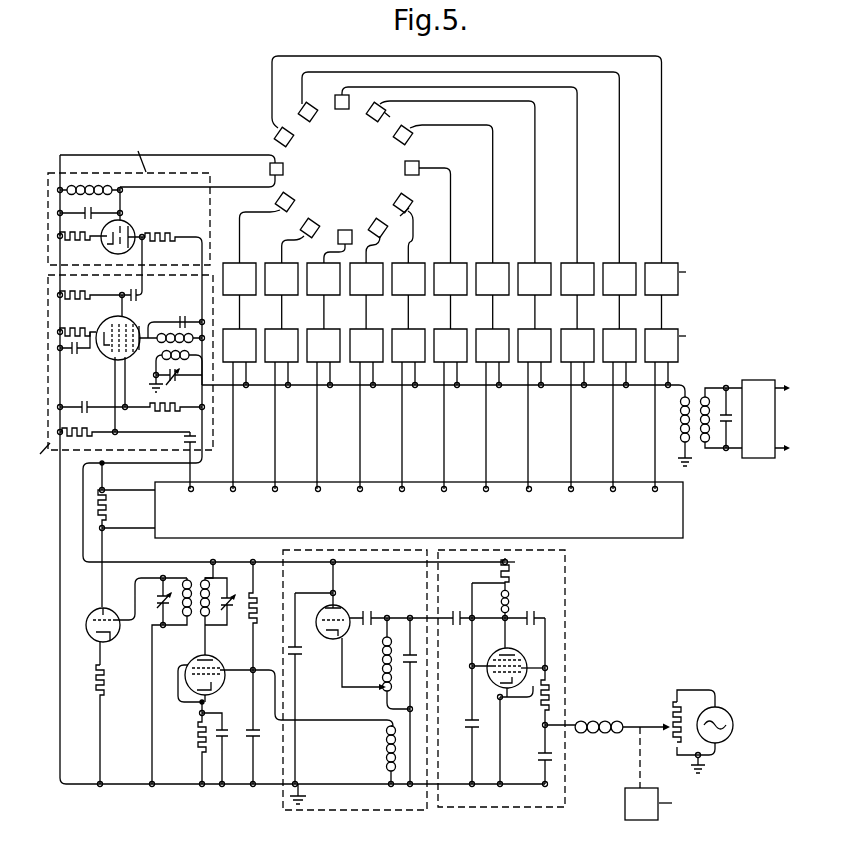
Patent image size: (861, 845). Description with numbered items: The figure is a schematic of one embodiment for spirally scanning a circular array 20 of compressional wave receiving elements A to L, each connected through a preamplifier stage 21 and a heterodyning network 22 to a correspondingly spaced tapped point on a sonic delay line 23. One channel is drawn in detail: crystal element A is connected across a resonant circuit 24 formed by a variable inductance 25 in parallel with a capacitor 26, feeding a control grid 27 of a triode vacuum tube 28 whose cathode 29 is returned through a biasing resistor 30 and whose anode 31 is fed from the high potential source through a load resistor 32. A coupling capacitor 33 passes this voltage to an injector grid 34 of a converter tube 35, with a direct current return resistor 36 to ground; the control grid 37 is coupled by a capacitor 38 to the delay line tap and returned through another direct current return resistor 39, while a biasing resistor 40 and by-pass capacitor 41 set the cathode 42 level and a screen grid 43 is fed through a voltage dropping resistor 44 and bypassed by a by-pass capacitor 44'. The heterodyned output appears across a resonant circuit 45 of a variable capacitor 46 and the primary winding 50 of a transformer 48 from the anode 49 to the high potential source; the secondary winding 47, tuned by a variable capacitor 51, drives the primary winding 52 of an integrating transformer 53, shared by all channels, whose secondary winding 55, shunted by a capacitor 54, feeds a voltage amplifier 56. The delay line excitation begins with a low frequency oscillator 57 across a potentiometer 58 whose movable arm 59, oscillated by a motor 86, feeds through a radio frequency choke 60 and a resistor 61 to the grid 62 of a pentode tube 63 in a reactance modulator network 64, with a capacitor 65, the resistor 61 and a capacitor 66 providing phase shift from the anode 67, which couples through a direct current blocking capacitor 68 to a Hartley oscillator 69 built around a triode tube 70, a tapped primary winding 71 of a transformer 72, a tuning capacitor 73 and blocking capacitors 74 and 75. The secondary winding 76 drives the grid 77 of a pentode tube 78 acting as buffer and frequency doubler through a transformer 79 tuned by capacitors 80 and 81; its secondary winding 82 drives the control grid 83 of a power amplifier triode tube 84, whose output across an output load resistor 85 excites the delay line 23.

The circular array 20 is at (353, 175).
The preamplifier stage 21 is at (266, 262).
The heterodyning network 22 is at (266, 328).
The sonic delay line 23 is at (419, 510).
The resonant circuit 24 is at (122, 200).
The variable inductance 25 is at (101, 203).
The capacitor 26 is at (85, 208).
The control grid 27 is at (125, 225).
The triode vacuum tube 28 is at (131, 233).
The cathode 29 is at (106, 247).
The biasing resistor 30 is at (72, 242).
The anode 31 is at (126, 249).
The load resistor 32 is at (172, 234).
The coupling capacitor 33 is at (131, 289).
The injector grid 34 is at (136, 322).
The converter tube 35 is at (138, 332).
The direct current return resistor 36 is at (57, 296).
The control grid 37 is at (102, 362).
The capacitor 38 is at (184, 441).
The direct current return resistor 39 is at (98, 436).
The biasing resistor 40 is at (77, 322).
The by-pass capacitor 41 is at (72, 355).
The cathode 42 is at (120, 298).
The screen grid 43 is at (113, 378).
The voltage dropping resistor 44 is at (165, 413).
The by-pass capacitor 44' is at (92, 398).
The resonant circuit 45 is at (188, 318).
The variable capacitor 46 is at (176, 318).
The secondary winding 47 is at (152, 375).
The transformer 48 is at (212, 340).
The anode 49 is at (158, 358).
The primary winding 50 is at (163, 318).
The variable capacitor 51 is at (174, 384).
The primary winding 52 is at (679, 405).
The integrating transformer 53 is at (703, 392).
The capacitor 54 is at (731, 418).
The secondary winding 55 is at (707, 450).
The voltage amplifier 56 is at (758, 458).
The low frequency oscillator 57 is at (734, 725).
The potentiometer 58 is at (673, 702).
The movable arm 59 is at (663, 725).
The radio frequency choke 60 is at (600, 714).
The resistor 61 is at (553, 702).
The grid 62 is at (498, 689).
The pentode tube 63 is at (523, 655).
The reactance modulator network 64 is at (561, 585).
The capacitor 65 is at (530, 611).
The capacitor 66 is at (536, 751).
The anode 67 is at (497, 655).
The direct current blocking capacitor 68 is at (453, 610).
The Hartley oscillator 69 is at (281, 557).
The triode tube 70 is at (342, 607).
The tapped primary winding 71 is at (381, 658).
The transformer 72 is at (385, 710).
The tuning capacitor 73 is at (404, 656).
The direct current blocking capacitor 74 is at (303, 650).
The direct current blocking capacitor 75 is at (372, 610).
The secondary winding 76 is at (386, 753).
The grid 77 is at (218, 683).
The pentode tube 78 is at (218, 661).
The transformer 79 is at (197, 583).
The capacitor 80 is at (235, 596).
The capacitor 81 is at (158, 600).
The secondary winding 82 is at (203, 629).
The control grid 83 is at (118, 630).
The triode tube 84 is at (110, 611).
The output load resistor 85 is at (108, 508).
The motor 86 is at (642, 820).